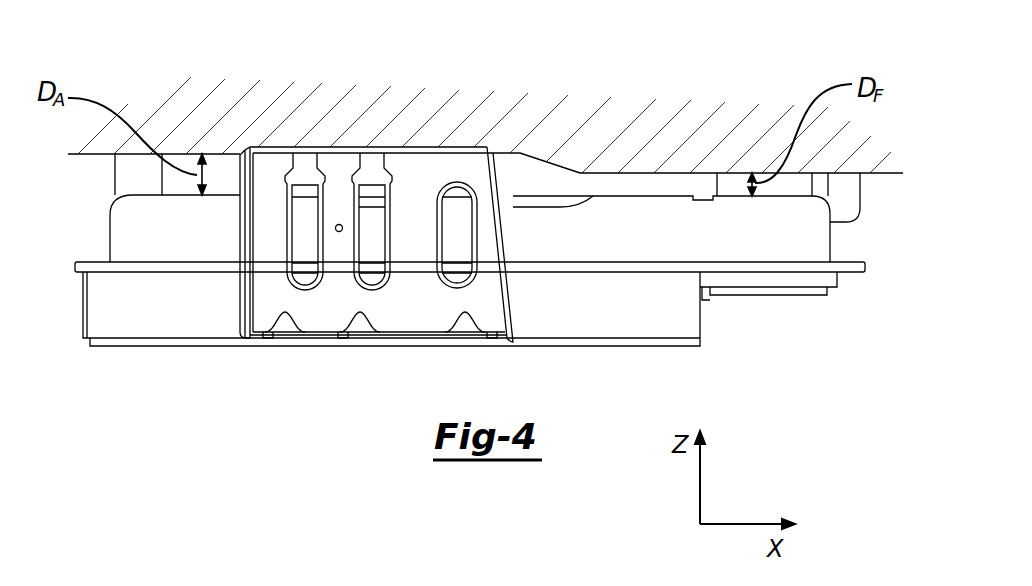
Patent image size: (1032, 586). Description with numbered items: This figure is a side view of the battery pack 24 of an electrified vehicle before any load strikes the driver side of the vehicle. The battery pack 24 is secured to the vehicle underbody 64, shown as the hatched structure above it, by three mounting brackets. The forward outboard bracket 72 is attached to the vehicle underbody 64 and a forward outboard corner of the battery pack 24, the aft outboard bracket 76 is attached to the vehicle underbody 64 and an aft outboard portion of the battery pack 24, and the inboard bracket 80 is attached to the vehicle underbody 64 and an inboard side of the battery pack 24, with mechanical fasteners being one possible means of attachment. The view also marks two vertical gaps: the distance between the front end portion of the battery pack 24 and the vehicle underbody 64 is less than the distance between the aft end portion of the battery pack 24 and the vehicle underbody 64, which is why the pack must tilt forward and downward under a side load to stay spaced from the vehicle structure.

The battery pack 24 is at (83, 302).
The vehicle underbody 64 is at (212, 155).
The forward outboard bracket 72 is at (843, 200).
The aft outboard bracket 76 is at (128, 174).
The inboard bracket 80 is at (268, 304).